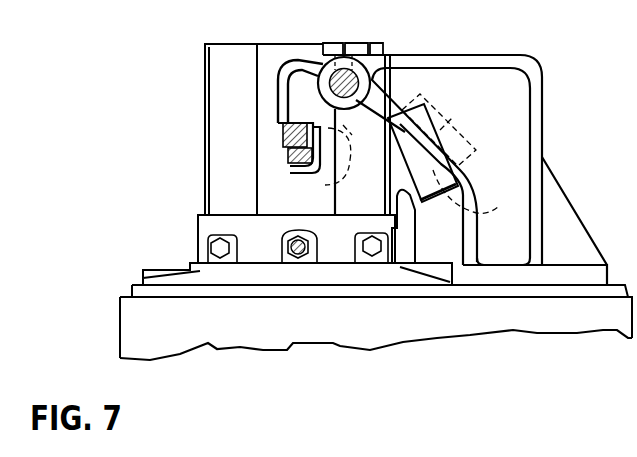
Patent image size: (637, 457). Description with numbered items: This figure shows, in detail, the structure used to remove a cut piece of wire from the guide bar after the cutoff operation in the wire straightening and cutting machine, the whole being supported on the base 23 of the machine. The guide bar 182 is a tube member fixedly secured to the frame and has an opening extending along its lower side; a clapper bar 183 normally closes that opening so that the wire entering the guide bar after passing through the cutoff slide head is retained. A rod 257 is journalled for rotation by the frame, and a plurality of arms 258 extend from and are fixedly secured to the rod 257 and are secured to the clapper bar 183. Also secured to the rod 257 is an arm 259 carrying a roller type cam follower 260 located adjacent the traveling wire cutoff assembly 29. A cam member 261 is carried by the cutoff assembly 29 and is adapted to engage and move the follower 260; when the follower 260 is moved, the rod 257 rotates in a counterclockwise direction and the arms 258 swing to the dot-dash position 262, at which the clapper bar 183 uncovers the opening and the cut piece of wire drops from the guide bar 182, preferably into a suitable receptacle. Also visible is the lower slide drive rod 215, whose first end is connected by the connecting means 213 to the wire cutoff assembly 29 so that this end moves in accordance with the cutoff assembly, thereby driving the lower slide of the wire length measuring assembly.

The base 23 is at (262, 343).
The wire cutoff assembly 29 is at (212, 88).
The guide bar 182 is at (283, 128).
The clapper bar 183 is at (292, 157).
The connecting means 213 is at (287, 233).
The lower slide drive rod 215 is at (303, 258).
The rod 257 is at (331, 79).
The arms 258 is at (292, 170).
The arm 259 is at (407, 151).
The roller type cam follower 260 is at (411, 215).
The cam member 261 is at (476, 213).
The dot-dash position 262 is at (332, 183).